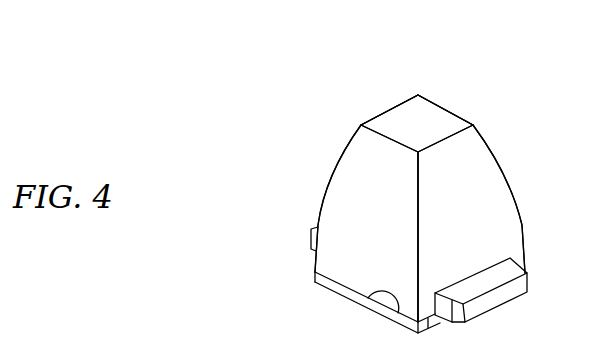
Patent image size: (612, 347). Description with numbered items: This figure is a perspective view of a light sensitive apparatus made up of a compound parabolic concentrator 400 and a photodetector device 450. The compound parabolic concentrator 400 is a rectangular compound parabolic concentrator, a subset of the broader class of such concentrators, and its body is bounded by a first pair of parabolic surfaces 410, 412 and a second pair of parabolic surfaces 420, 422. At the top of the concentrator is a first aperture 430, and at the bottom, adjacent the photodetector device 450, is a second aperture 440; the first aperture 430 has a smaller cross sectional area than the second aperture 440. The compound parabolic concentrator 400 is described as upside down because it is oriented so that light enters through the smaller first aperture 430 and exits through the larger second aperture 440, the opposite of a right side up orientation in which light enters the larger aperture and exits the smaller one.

The compound parabolic concentrator 400 is at (258, 132).
The parabolic surface 410 is at (370, 178).
The parabolic surface 412 is at (463, 117).
The parabolic surface 420 is at (470, 202).
The parabolic surface 422 is at (385, 112).
The first aperture 430 is at (426, 120).
The second aperture 440 is at (375, 293).
The photodetector device 450 is at (337, 290).